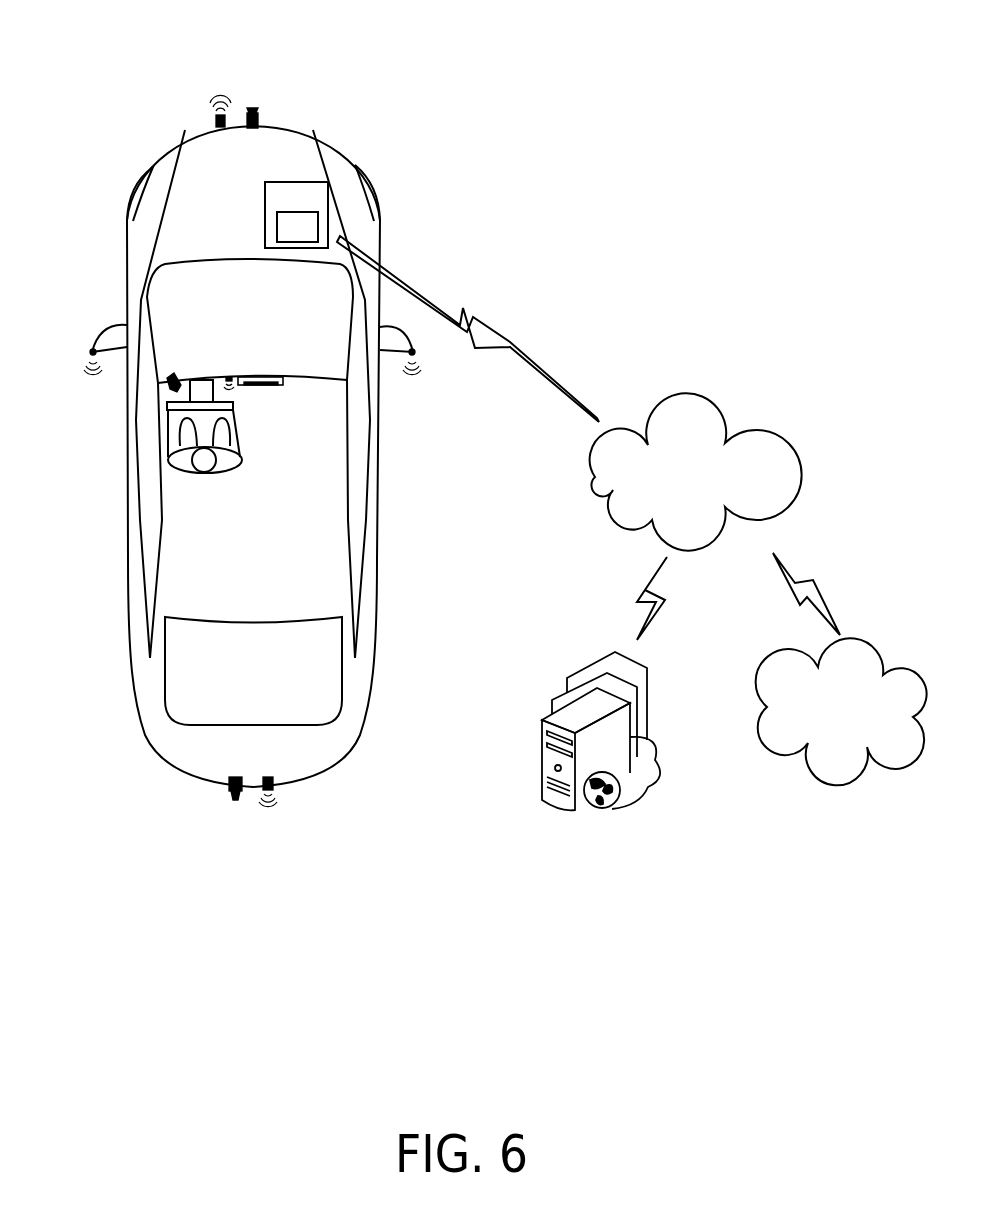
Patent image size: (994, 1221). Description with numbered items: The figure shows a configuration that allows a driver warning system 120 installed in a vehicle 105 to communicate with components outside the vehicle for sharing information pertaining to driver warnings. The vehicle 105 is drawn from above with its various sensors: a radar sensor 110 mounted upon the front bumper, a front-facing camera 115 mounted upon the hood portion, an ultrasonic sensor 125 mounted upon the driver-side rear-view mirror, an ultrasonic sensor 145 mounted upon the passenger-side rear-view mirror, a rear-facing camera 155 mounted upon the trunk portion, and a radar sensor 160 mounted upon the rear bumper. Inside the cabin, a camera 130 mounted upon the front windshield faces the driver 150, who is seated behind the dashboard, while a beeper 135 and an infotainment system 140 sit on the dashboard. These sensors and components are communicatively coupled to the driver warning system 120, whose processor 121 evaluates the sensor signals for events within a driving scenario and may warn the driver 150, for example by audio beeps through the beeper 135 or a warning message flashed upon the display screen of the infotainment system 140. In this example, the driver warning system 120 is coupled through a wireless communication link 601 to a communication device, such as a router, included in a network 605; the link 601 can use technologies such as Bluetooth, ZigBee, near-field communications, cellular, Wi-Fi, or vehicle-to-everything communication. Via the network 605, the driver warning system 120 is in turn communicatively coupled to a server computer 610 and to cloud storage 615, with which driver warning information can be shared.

The vehicle 105 is at (138, 88).
The radar sensor 110 is at (214, 118).
The front-facing camera 115 is at (259, 118).
The driver warning system 120 is at (296, 215).
The processor 121 is at (297, 227).
The ultrasonic sensor 125 is at (92, 352).
The camera 130 is at (173, 378).
The beeper 135 is at (230, 376).
The infotainment system 140 is at (280, 377).
The ultrasonic sensor 145 is at (413, 359).
The driver 150 is at (210, 475).
The rear-facing camera 155 is at (237, 777).
The radar sensor 160 is at (267, 777).
The wireless communication link 601 is at (473, 317).
The network 605 is at (715, 516).
The server computer 610 is at (526, 762).
The cloud storage 615 is at (841, 711).